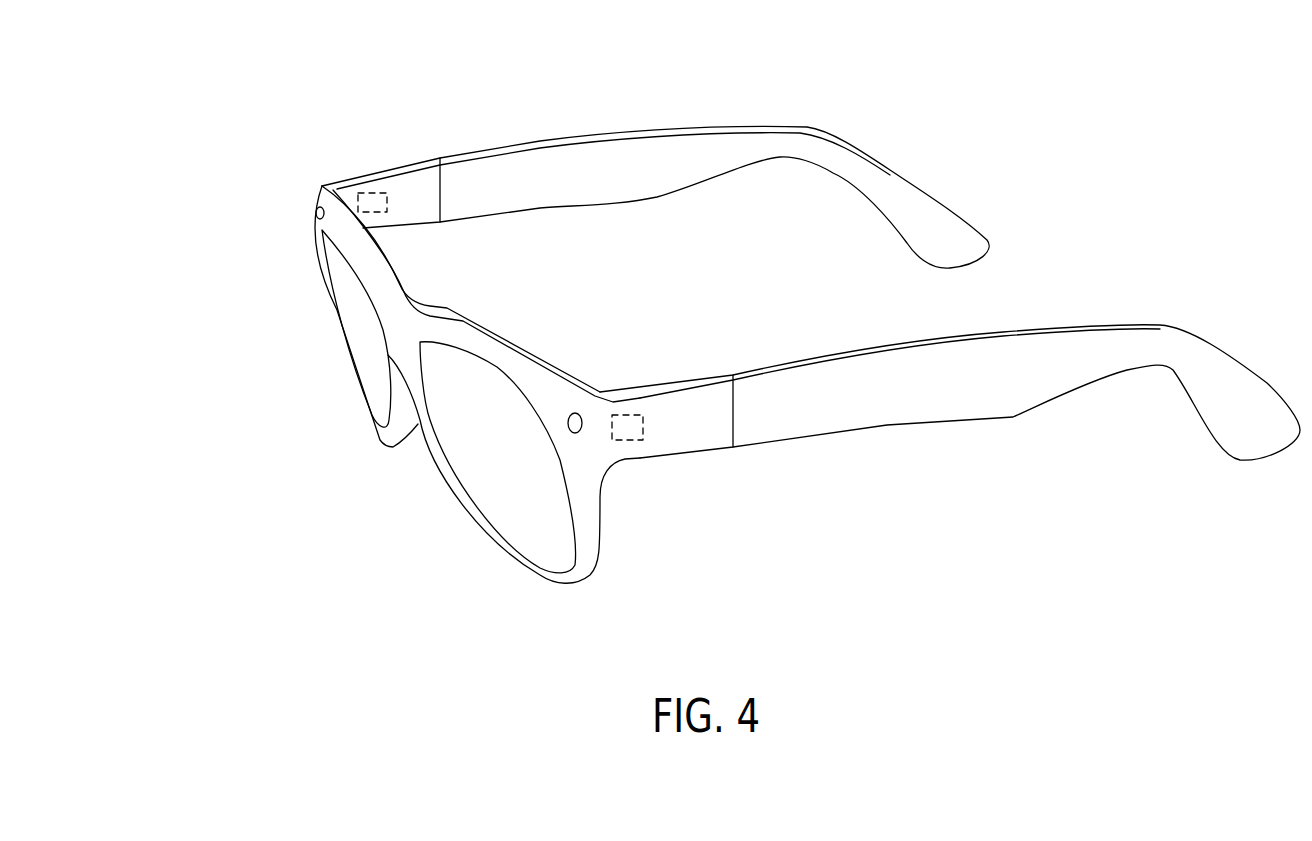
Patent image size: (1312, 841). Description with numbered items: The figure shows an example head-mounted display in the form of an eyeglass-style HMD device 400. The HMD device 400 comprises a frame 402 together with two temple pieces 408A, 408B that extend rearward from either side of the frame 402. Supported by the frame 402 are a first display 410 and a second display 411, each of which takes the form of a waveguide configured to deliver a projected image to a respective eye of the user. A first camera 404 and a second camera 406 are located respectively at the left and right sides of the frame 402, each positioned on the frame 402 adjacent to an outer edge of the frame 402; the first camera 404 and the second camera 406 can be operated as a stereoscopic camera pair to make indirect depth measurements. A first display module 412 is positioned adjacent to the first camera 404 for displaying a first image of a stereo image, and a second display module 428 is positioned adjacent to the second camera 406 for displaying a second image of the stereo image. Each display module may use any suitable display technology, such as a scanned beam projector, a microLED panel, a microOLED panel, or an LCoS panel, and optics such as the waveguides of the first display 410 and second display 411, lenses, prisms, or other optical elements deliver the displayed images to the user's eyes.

The HMD device 400 is at (105, 136).
The frame 402 is at (426, 457).
The first camera 404 is at (577, 411).
The second camera 406 is at (316, 209).
The temple piece 408A is at (600, 188).
The temple piece 408B is at (869, 409).
The first display 410 is at (497, 537).
The second display 411 is at (370, 407).
The first display module 412 is at (630, 441).
The second display module 428 is at (384, 190).